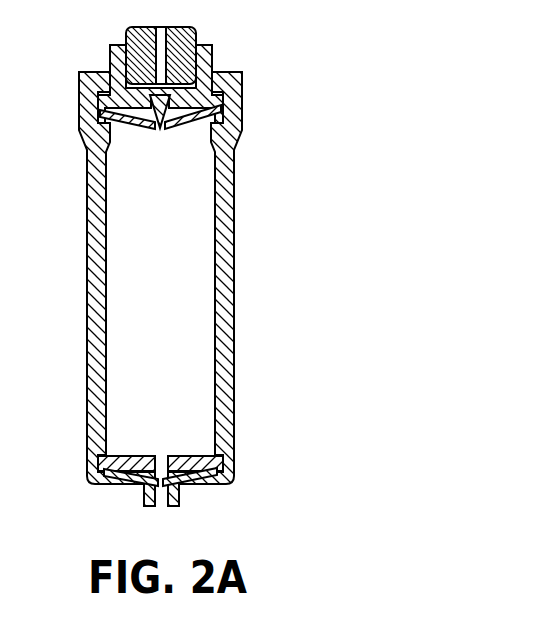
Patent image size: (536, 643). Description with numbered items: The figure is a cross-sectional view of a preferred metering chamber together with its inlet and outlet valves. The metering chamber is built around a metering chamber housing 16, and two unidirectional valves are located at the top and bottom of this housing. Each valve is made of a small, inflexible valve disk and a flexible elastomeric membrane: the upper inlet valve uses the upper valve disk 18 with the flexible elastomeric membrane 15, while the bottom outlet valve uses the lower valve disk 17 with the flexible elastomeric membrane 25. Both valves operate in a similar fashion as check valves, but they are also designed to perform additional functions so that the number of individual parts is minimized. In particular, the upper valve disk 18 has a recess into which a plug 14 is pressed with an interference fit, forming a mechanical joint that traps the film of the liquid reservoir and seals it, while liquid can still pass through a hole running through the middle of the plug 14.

The plug 14 is at (198, 32).
The flexible elastomeric membrane 15 is at (188, 125).
The metering chamber housing 16 is at (233, 385).
The valve disk 17 is at (125, 455).
The valve disk 18 is at (108, 53).
The flexible elastomeric membrane 25 is at (197, 488).